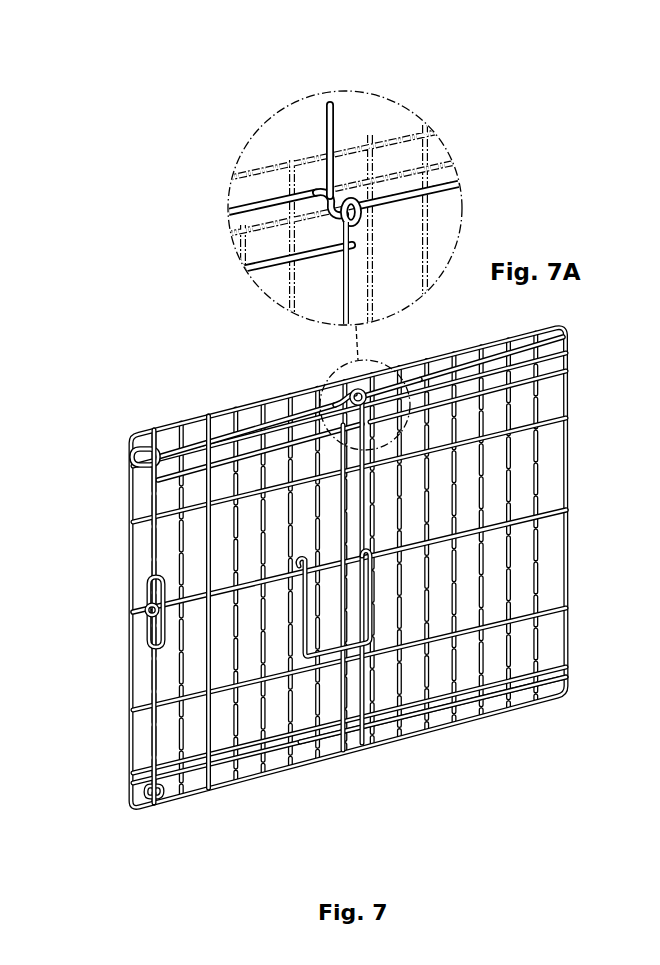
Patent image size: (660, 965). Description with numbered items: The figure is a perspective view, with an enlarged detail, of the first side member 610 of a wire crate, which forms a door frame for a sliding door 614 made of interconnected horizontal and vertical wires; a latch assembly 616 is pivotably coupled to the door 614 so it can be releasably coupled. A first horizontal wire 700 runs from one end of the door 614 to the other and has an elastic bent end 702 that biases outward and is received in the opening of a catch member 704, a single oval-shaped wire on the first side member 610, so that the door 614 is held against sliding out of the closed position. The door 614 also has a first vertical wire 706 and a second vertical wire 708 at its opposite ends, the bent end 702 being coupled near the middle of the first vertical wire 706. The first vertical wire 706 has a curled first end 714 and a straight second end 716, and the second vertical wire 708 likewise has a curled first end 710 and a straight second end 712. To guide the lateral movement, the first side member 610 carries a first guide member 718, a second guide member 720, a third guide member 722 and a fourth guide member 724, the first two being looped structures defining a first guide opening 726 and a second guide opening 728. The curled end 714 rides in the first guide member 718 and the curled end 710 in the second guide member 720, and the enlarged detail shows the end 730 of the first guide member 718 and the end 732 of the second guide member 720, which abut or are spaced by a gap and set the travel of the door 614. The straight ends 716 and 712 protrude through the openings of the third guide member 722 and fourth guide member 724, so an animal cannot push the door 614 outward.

In FIG. 7, the first side member 610 is at (563, 461).
In FIG. 7, the door 614 is at (205, 705).
In FIG. 7, the latch assembly 616 is at (316, 655).
In FIG. 7, the first horizontal wire 700 is at (222, 588).
In FIG. 7, the bent end 702 is at (150, 609).
In FIG. 7, the catch member 704 is at (150, 580).
In FIG. 7, the first vertical wire 706 is at (152, 687).
In FIG. 7, the second vertical wire 708 is at (366, 518).
In FIG. 7, the first end of second vertical wire 710 is at (357, 391).
In FIG. 7A, the first end of second vertical wire 710 is at (352, 200).
In FIG. 7, the second end of second vertical wire 712 is at (366, 747).
In FIG. 7, the first end of first vertical wire 714 is at (152, 447).
In FIG. 7, the second end of first vertical wire 716 is at (157, 795).
In FIG. 7, the first guide member 718 is at (224, 430).
In FIG. 7A, the first guide member 718 is at (237, 249).
In FIG. 7, the second guide member 720 is at (513, 350).
In FIG. 7A, the second guide member 720 is at (440, 164).
In FIG. 7, the third guide member 722 is at (140, 797).
In FIG. 7, the fourth guide member 724 is at (552, 682).
In FIG. 7, the first guide opening 726 is at (291, 402).
In FIG. 7A, the first guide opening 726 is at (233, 216).
In FIG. 7, the second guide opening 728 is at (553, 341).
In FIG. 7A, the second guide opening 728 is at (408, 172).
In FIG. 7, the end of first guide member 730 is at (345, 399).
In FIG. 7A, the end of first guide member 730 is at (318, 208).
In FIG. 7A, the end of second guide member 732 is at (330, 105).